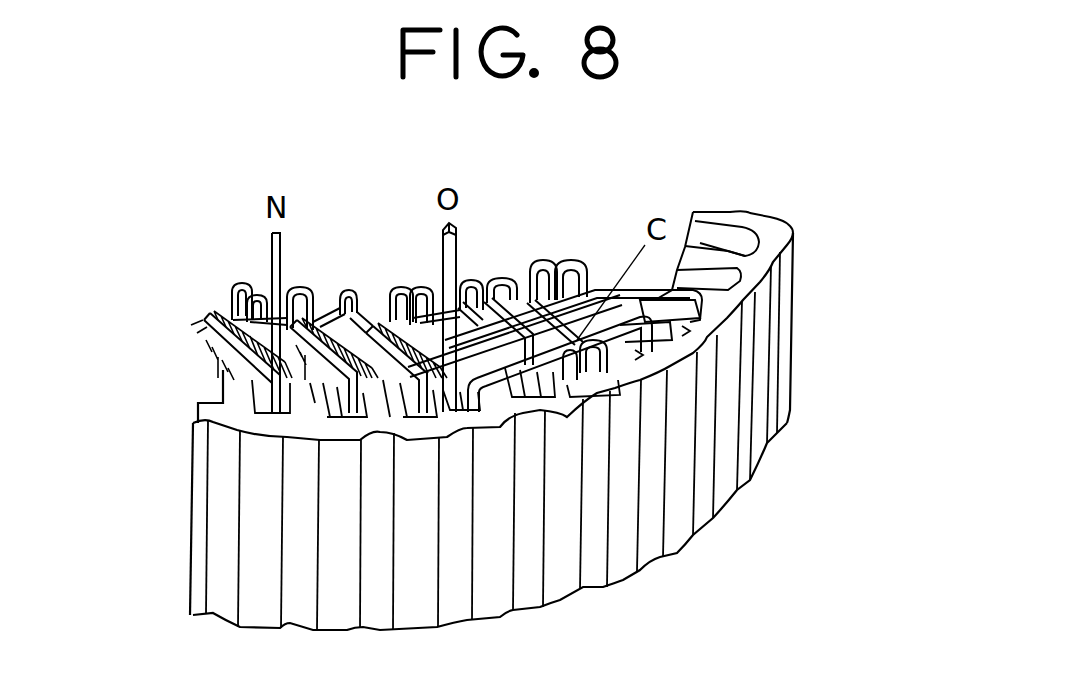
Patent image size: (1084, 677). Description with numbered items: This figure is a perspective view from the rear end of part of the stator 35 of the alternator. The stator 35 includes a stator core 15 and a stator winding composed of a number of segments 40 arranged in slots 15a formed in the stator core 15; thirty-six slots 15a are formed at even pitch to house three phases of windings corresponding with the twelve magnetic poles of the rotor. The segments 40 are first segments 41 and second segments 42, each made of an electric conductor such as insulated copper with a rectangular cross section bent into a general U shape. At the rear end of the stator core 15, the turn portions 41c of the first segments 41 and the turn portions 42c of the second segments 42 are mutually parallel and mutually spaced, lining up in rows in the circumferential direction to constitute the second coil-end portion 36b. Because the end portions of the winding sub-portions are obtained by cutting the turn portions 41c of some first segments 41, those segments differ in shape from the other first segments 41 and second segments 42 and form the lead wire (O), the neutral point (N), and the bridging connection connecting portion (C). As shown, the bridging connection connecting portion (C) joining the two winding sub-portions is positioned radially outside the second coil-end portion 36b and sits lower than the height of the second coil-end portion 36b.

The stator core 15 is at (800, 371).
The slot 15a is at (727, 280).
The stator 35 is at (152, 229).
The second coil-end portion 36b is at (182, 297).
The segment 40 is at (417, 212).
The first segment 41 is at (411, 290).
The second segment 42 is at (372, 305).
The turn portion of the first segment 41c is at (585, 260).
The turn portion of the second segment 42c is at (542, 260).